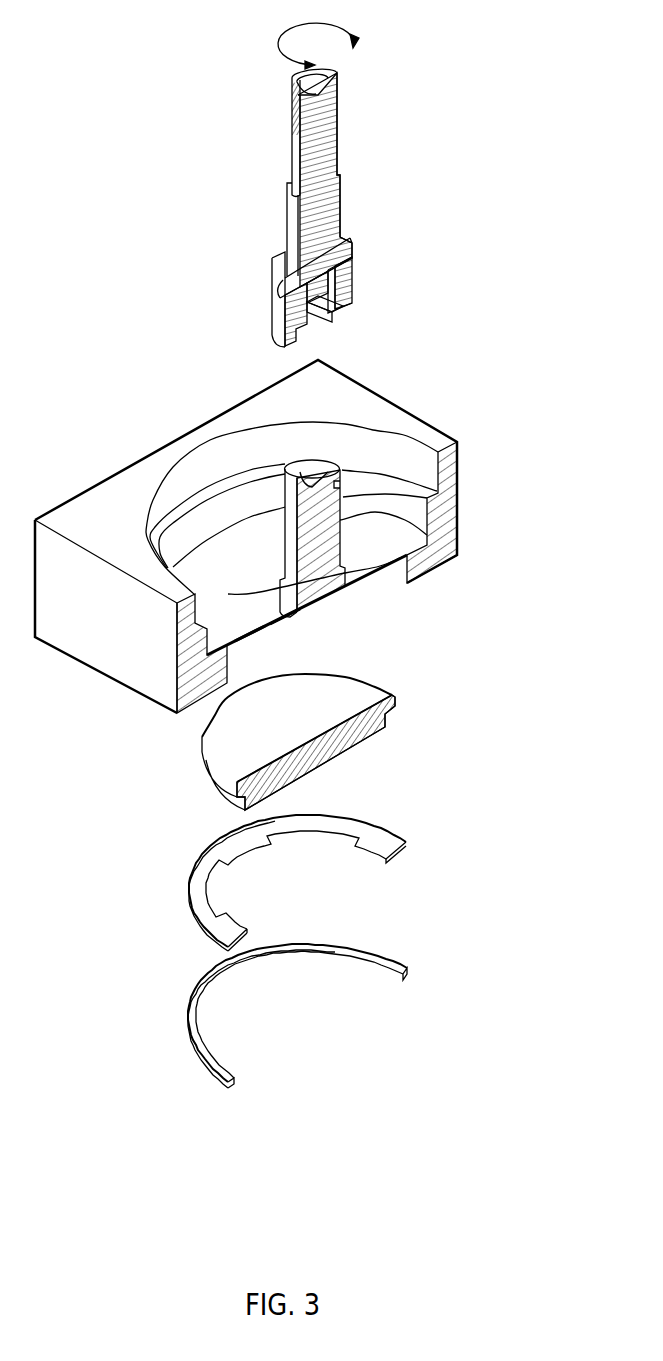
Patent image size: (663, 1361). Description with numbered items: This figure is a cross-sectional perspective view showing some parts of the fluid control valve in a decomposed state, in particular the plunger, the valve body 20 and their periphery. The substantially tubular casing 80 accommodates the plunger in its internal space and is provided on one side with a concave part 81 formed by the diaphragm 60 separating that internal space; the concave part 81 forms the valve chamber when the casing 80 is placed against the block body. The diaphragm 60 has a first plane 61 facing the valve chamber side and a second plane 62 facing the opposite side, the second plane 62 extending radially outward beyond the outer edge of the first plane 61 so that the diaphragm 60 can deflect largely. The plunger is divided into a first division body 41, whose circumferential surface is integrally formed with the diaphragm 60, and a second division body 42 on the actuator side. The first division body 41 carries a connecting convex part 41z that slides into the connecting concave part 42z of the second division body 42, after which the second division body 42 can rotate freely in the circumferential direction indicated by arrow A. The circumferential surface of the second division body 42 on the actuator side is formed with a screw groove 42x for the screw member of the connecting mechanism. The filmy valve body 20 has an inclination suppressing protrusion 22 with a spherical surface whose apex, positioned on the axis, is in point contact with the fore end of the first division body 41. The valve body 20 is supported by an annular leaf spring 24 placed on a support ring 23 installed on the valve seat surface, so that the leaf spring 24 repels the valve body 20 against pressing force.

The arrow A direction A is at (318, 35).
The second division body 42 is at (341, 194).
The screw groove 42x is at (292, 97).
The connecting concave part 42z is at (335, 318).
The casing 80 is at (443, 430).
The concave part 81 is at (412, 565).
The diaphragm 60 is at (364, 574).
The first plane 61 is at (290, 630).
The second plane 62 is at (247, 633).
The first division body 41 is at (340, 494).
The connecting convex part 41z is at (295, 472).
The valve body 20 is at (395, 704).
The inclination suppressing protrusion 22 is at (298, 735).
The leaf spring 24 is at (408, 840).
The support ring 23 is at (410, 968).